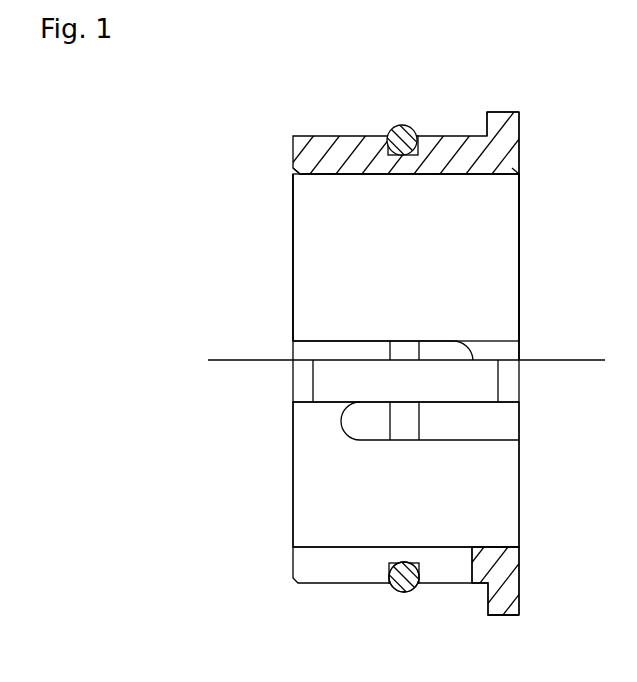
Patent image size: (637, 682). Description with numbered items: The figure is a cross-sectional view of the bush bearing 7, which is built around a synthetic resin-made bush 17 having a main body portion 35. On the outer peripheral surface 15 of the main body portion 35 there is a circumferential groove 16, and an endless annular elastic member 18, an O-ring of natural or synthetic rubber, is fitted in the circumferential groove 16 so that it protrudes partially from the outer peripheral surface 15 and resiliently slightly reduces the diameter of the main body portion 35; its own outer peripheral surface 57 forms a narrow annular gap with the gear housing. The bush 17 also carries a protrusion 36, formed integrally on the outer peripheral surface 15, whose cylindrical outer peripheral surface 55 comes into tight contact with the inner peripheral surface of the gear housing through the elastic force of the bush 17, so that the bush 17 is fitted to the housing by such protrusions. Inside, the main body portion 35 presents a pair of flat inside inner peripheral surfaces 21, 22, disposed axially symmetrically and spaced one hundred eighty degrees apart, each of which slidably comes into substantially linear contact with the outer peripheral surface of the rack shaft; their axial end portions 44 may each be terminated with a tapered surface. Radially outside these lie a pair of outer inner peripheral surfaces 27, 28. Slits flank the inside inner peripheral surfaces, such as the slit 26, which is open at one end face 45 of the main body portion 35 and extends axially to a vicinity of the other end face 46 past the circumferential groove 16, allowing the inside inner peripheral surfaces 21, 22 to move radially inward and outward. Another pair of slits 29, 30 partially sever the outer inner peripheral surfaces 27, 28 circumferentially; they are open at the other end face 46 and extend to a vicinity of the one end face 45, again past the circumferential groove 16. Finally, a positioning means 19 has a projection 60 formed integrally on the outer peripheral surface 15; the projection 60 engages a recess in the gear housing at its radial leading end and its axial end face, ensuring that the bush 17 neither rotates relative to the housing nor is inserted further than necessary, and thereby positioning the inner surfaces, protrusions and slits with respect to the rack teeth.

The bush bearing 7 is at (262, 247).
The outer peripheral surface 15 is at (356, 136).
The circumferential groove 16 is at (391, 584).
The bush 17 is at (523, 515).
The endless annular elastic member 18 is at (402, 125).
The positioning means 19 is at (531, 610).
The inside inner peripheral surface 21 is at (412, 176).
The inside inner peripheral surface 22 is at (333, 396).
The slit 26 is at (500, 422).
The outer inner peripheral surface 27 is at (332, 497).
The outer inner peripheral surface 28 is at (340, 283).
The slit 29 is at (325, 567).
The slit 30 is at (340, 347).
The main body portion 35 is at (500, 287).
The protrusion 36 is at (512, 112).
The end portion 44 is at (293, 174).
The one end face 45 is at (520, 232).
The other end face 46 is at (293, 207).
The cylindrical outer peripheral surface 55 is at (490, 112).
The outer peripheral surface 57 is at (406, 592).
The projection 60 is at (500, 598).